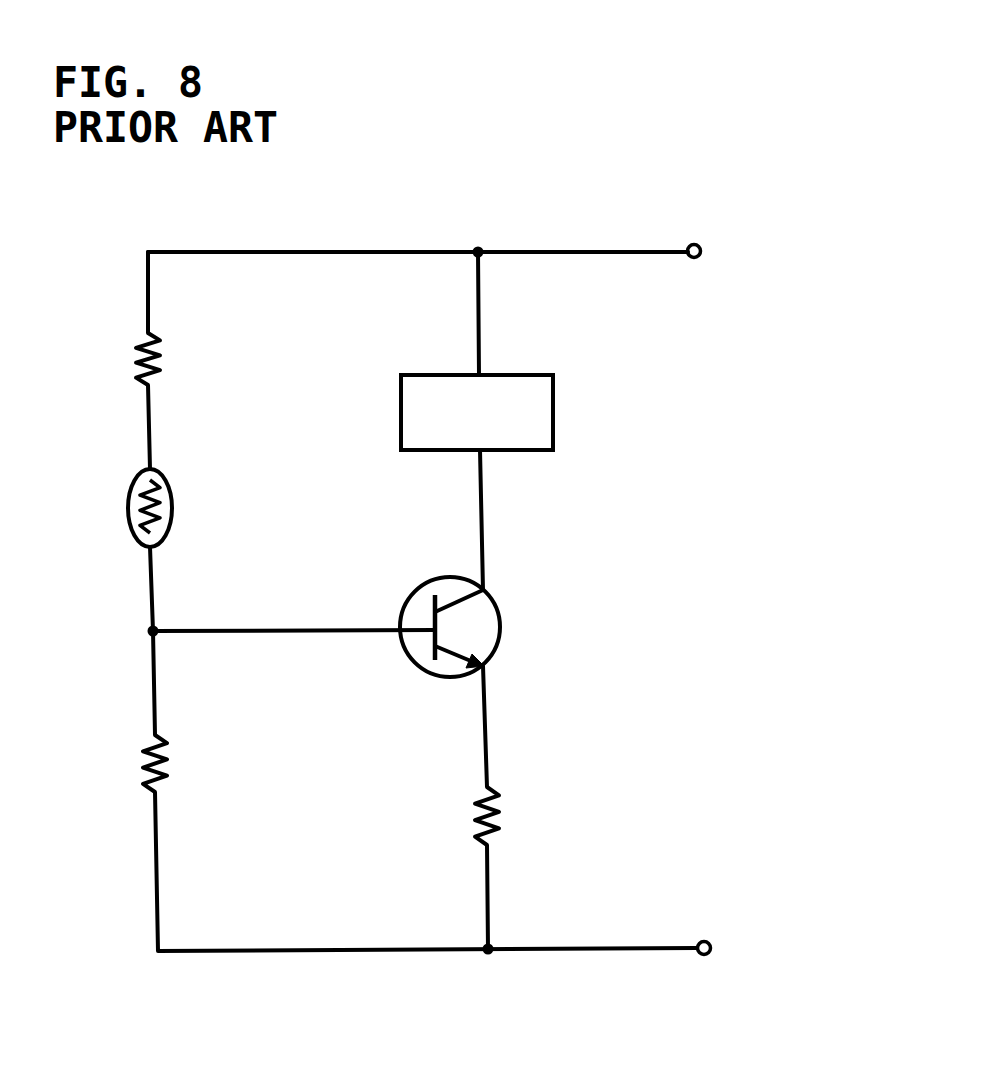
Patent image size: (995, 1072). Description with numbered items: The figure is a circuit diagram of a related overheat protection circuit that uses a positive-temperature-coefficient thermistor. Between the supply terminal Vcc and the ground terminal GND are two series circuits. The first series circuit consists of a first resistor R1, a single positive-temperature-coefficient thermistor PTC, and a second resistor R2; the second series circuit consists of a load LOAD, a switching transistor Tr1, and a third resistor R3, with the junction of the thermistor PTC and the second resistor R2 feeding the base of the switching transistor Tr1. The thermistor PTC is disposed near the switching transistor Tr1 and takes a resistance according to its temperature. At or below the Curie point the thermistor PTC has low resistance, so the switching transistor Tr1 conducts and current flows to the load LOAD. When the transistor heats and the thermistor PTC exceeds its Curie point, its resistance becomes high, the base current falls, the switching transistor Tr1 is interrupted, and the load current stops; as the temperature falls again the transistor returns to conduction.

The first resistor R1 is at (100, 359).
The positive-temperature-coefficient thermistor PTC is at (100, 508).
The second resistor R2 is at (106, 763).
The third resistor R3 is at (446, 816).
The load LOAD is at (477, 412).
The switching transistor Tr1 is at (488, 627).
The power supply terminal Vcc is at (748, 249).
The ground terminal GND is at (767, 947).